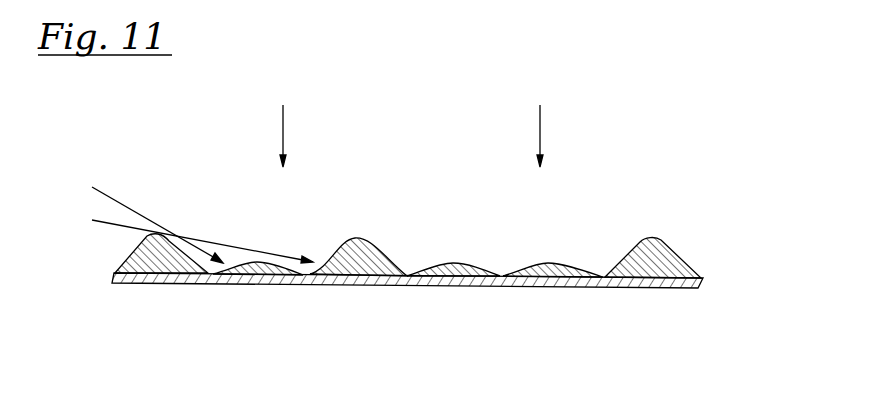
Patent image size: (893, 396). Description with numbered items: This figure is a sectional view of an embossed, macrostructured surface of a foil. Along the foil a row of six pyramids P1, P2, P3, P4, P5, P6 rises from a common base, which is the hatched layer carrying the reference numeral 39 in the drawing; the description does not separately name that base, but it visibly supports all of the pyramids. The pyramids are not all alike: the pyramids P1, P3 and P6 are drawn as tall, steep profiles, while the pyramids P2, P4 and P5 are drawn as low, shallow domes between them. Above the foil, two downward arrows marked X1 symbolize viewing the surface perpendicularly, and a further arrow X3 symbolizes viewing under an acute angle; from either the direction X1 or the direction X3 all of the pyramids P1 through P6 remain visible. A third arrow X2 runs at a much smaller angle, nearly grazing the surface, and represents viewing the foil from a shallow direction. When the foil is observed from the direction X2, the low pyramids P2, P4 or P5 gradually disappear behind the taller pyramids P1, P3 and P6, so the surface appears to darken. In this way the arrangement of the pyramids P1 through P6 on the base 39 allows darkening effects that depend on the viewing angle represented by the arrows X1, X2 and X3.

The substrate / base plate 39 is at (697, 288).
The pyramid P1 is at (161, 283).
The pyramid P2 is at (258, 297).
The pyramid P3 is at (358, 285).
The pyramid P4 is at (453, 298).
The pyramid P5 is at (553, 298).
The pyramid P6 is at (653, 285).
The viewing direction X1 is at (414, 118).
The viewing direction X2 is at (193, 234).
The viewing direction X3 is at (148, 211).